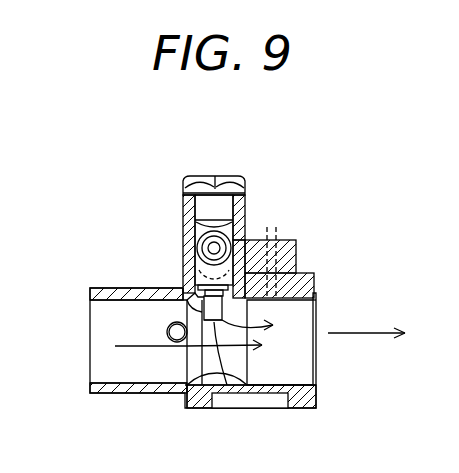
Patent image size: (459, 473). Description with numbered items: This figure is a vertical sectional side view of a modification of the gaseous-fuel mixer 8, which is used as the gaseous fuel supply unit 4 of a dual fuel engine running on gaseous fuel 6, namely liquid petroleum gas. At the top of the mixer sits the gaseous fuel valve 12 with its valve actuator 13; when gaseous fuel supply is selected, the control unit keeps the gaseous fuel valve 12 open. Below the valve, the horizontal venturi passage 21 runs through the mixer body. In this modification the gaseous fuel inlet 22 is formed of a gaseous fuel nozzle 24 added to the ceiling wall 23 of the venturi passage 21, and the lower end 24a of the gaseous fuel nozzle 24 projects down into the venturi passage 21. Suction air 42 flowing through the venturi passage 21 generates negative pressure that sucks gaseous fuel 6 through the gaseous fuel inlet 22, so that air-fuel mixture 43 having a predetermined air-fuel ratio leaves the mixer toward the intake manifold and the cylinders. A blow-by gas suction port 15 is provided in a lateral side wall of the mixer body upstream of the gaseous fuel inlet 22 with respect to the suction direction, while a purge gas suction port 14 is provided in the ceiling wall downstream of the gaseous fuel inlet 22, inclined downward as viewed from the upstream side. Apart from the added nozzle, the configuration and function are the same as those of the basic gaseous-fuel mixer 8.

The gaseous fuel valve 12 is at (192, 235).
The valve actuator 13 is at (192, 255).
The gaseous fuel supply unit 4 is at (185, 280).
The gaseous-fuel mixer 8 is at (127, 270).
The purge gas suction port 14 is at (270, 280).
The ceiling wall 23 is at (190, 302).
The blow-by gas suction port 15 is at (166, 337).
The suction air 42 is at (125, 347).
The gaseous fuel nozzle 24 is at (210, 323).
The lower end 24a is at (208, 323).
The gaseous fuel inlet 22 is at (225, 312).
The gaseous fuel 6 is at (256, 343).
The venturi passage 21 is at (217, 362).
The air-fuel mixture 43 is at (362, 334).